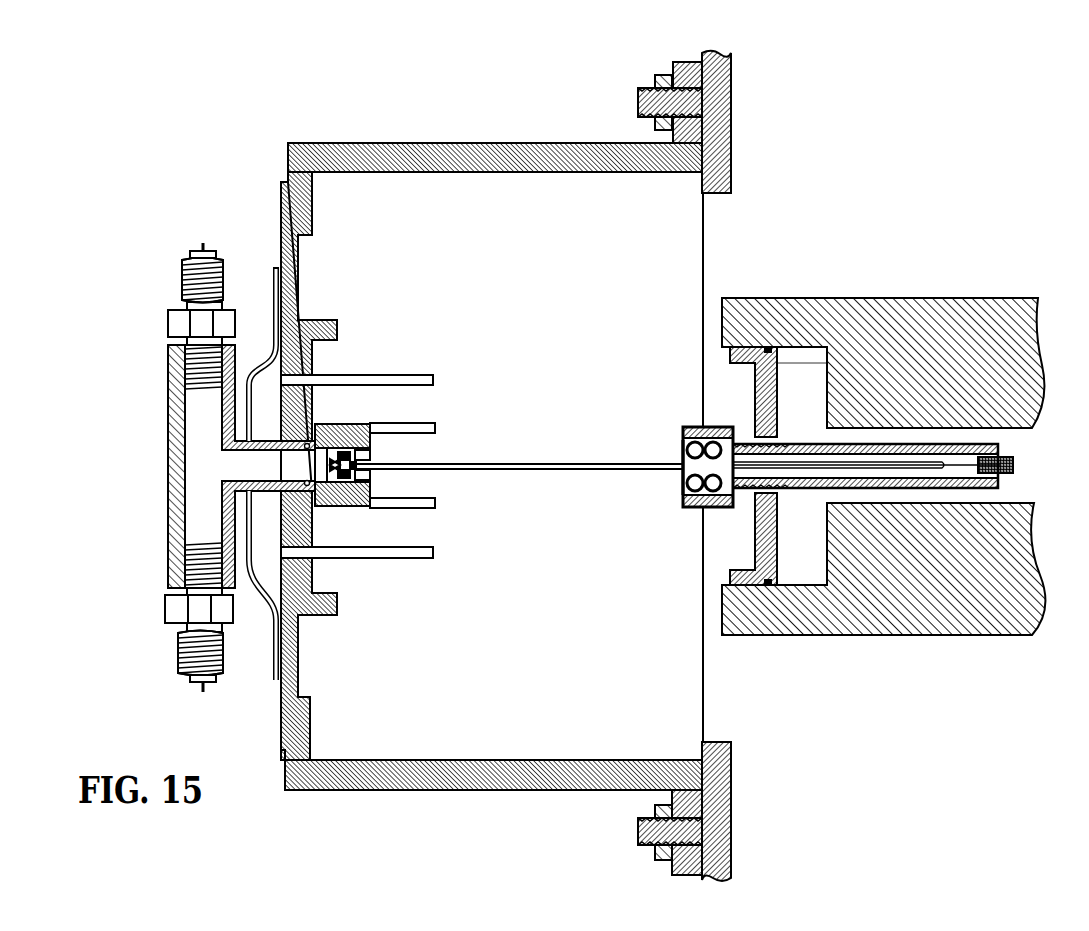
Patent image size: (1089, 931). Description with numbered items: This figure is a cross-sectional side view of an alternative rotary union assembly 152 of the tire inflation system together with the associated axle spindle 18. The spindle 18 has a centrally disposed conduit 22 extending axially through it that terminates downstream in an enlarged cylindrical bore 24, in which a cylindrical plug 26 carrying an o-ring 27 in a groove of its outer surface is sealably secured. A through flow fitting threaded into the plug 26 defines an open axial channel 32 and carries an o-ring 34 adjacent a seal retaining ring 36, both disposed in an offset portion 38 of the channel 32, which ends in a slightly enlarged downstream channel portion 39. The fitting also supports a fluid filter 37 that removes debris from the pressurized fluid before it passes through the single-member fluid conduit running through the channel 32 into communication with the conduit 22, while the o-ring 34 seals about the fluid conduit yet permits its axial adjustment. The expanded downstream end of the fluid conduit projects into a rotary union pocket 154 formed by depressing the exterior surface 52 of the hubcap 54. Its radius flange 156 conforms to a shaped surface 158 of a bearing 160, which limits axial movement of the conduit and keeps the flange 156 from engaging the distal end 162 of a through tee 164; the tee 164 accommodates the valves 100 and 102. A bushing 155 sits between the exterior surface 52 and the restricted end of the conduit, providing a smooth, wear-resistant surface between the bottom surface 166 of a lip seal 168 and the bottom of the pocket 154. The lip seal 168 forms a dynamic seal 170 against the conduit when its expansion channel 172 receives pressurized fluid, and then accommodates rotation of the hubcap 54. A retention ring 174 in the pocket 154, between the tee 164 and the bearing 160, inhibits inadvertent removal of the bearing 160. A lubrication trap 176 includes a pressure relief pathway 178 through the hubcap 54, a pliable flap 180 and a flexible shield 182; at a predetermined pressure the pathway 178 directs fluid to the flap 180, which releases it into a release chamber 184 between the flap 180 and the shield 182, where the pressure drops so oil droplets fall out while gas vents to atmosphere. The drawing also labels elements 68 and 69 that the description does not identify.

The rotary union assembly 152 is at (876, 50).
The bolt 69 is at (655, 74).
The flange 68 is at (731, 98).
The hubcap 54 is at (432, 145).
The exterior surface 52 is at (285, 213).
The flexible shield 182 is at (263, 302).
The valve 100 is at (182, 270).
The release chamber 184 is at (263, 370).
The lubrication trap 176 is at (476, 292).
The pliable flap 180 is at (312, 360).
The pressure relief pathway 178 is at (350, 375).
The expansion channel 172 is at (373, 428).
The shaped surface 158 is at (323, 424).
The lip seal 168 is at (347, 425).
The o-ring 34 is at (698, 427).
The o-ring 27 is at (768, 347).
The cylindrical plug 26 is at (798, 377).
The enlarged cylindrical bore 24 is at (768, 383).
The axle spindle 18 is at (965, 316).
The through tee 164 is at (172, 418).
The distal end 162 is at (230, 457).
The bottom surface 166 is at (370, 447).
The dynamic seal 170 is at (301, 464).
The bearing 160 is at (225, 484).
The bushing 155 is at (363, 477).
The offset portion 38 is at (672, 480).
The seal retaining ring 36 is at (682, 484).
The retention ring 174 is at (300, 483).
The radius flange 156 is at (330, 506).
The rotary union pocket 154 is at (366, 496).
The enlarged channel portion 39 is at (692, 504).
The fluid filter 37 is at (1013, 465).
The axial channel 32 is at (960, 467).
The conduit 22 is at (933, 497).
The valve 102 is at (178, 655).